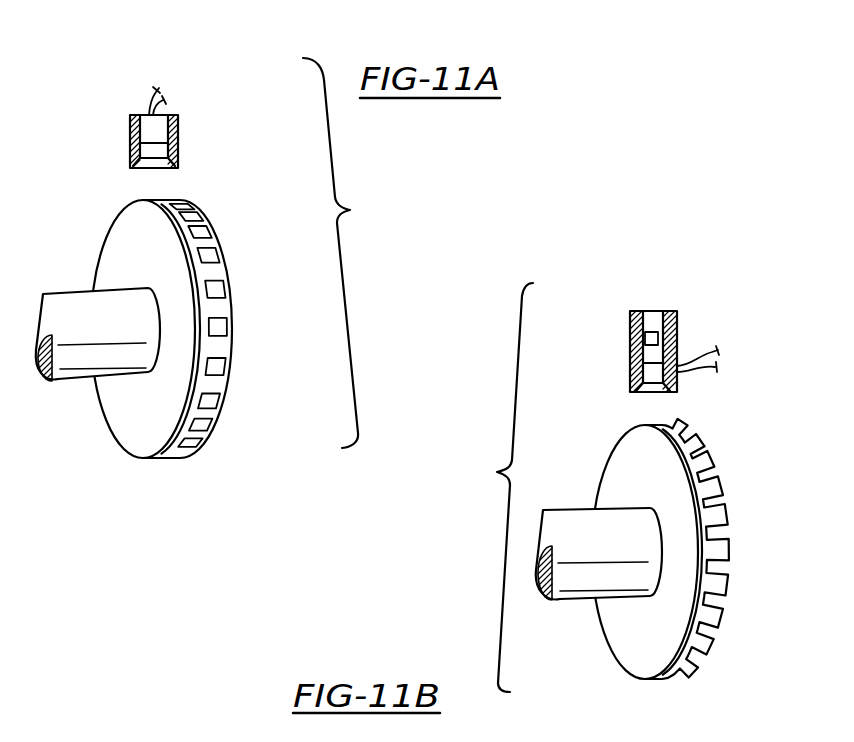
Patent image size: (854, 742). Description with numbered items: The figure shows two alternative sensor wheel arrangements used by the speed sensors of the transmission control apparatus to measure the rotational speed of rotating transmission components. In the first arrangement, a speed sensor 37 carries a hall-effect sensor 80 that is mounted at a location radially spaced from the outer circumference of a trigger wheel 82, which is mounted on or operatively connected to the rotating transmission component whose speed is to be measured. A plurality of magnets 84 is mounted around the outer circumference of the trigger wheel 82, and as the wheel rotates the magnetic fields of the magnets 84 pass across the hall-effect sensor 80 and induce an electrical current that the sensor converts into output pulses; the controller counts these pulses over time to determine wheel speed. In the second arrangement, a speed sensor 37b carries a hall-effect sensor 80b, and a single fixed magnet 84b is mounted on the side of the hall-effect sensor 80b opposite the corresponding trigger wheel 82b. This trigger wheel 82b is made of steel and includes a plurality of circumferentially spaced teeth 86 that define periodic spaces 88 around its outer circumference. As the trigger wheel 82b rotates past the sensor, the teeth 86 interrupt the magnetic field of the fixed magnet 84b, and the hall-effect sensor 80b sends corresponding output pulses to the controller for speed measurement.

In FIG. 11A, the speed sensor 37 is at (179, 132).
In FIG. 11A, the hall-effect sensor 80 is at (163, 156).
In FIG. 11A, the trigger wheel 82 is at (120, 227).
In FIG. 11A, the magnets 84 is at (212, 253).
In FIG. 11B, the speed sensor 37b is at (677, 328).
In FIG. 11B, the hall-effect sensor 80b is at (647, 373).
In FIG. 11B, the trigger wheel 82b is at (612, 468).
In FIG. 11B, the fixed magnet 84b is at (652, 332).
In FIG. 11B, the teeth 86 is at (707, 450).
In FIG. 11B, the periodic spaces 88 is at (720, 533).